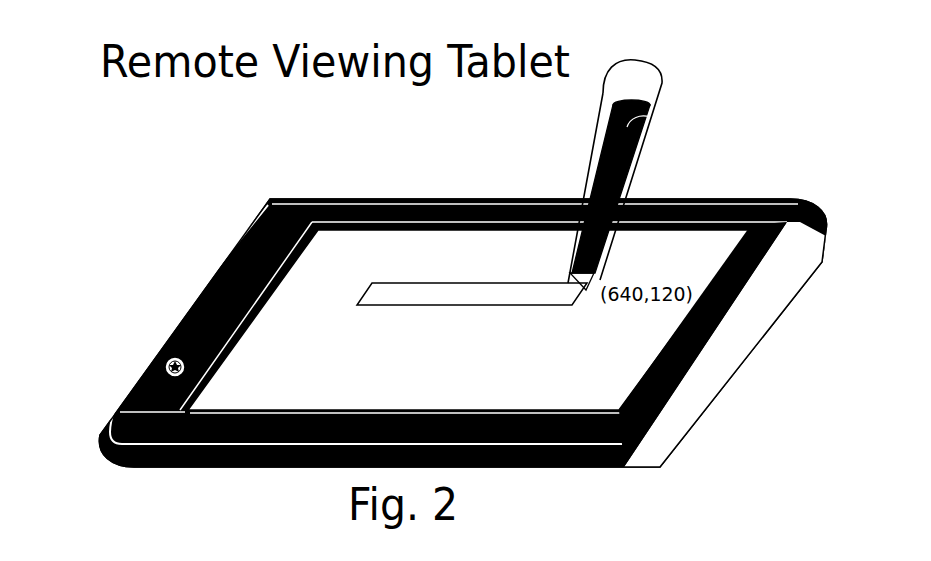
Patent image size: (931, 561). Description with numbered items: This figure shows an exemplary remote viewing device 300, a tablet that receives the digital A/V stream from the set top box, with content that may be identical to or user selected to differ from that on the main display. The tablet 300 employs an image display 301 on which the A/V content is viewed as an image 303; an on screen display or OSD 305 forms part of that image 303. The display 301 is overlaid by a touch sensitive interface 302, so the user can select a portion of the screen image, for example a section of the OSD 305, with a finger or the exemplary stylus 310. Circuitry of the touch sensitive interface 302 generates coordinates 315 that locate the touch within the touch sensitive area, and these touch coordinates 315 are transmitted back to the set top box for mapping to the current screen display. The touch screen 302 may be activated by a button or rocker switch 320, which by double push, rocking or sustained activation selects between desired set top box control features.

The remote viewing device 300 is at (683, 440).
The image display 301 is at (276, 322).
The touch sensitive interface 302 is at (604, 391).
The image 303 is at (332, 280).
The OSD 305 is at (603, 330).
The stylus 310 is at (618, 137).
The coordinates 315 is at (638, 271).
The button or rocker switch 320 is at (166, 366).